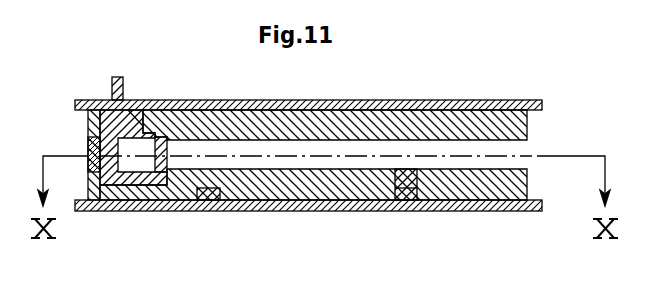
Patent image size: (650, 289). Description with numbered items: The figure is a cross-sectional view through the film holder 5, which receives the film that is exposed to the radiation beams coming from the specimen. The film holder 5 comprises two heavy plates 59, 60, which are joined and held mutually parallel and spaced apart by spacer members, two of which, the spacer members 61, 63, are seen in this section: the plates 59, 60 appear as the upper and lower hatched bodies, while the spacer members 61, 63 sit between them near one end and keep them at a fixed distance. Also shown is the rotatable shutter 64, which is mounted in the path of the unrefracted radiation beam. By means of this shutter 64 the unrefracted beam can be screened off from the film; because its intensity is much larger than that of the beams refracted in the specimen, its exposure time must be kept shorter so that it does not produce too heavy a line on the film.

The film holder 5 is at (206, 214).
The heavy plate 59 is at (273, 178).
The heavy plate 60 is at (378, 127).
The spacer member 61 is at (90, 150).
The spacer member 63 is at (161, 172).
The rotatable shutter 64 is at (138, 110).